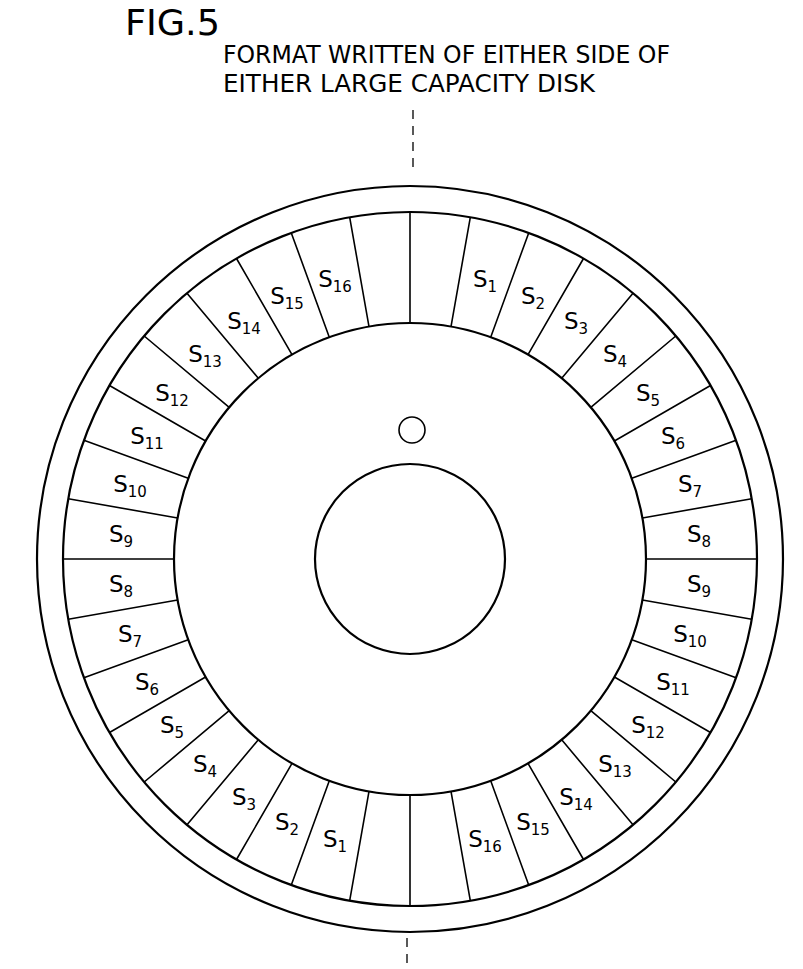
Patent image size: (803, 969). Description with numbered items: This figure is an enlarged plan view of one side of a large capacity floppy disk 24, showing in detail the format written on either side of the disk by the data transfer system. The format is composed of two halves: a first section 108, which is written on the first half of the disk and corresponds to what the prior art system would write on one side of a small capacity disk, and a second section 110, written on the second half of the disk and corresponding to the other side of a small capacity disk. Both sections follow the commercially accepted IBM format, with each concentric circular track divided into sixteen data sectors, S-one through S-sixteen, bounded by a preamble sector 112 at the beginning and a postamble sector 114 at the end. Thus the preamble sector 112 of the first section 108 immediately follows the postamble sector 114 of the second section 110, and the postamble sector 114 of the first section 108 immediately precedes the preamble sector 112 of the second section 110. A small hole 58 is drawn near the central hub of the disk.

The large capacity floppy disk 24 is at (630, 248).
The index hole 58 is at (424, 429).
The first section 108 is at (695, 353).
The second section 110 is at (80, 440).
The preamble sector 112 is at (450, 222).
The postamble sector 114 is at (358, 222).